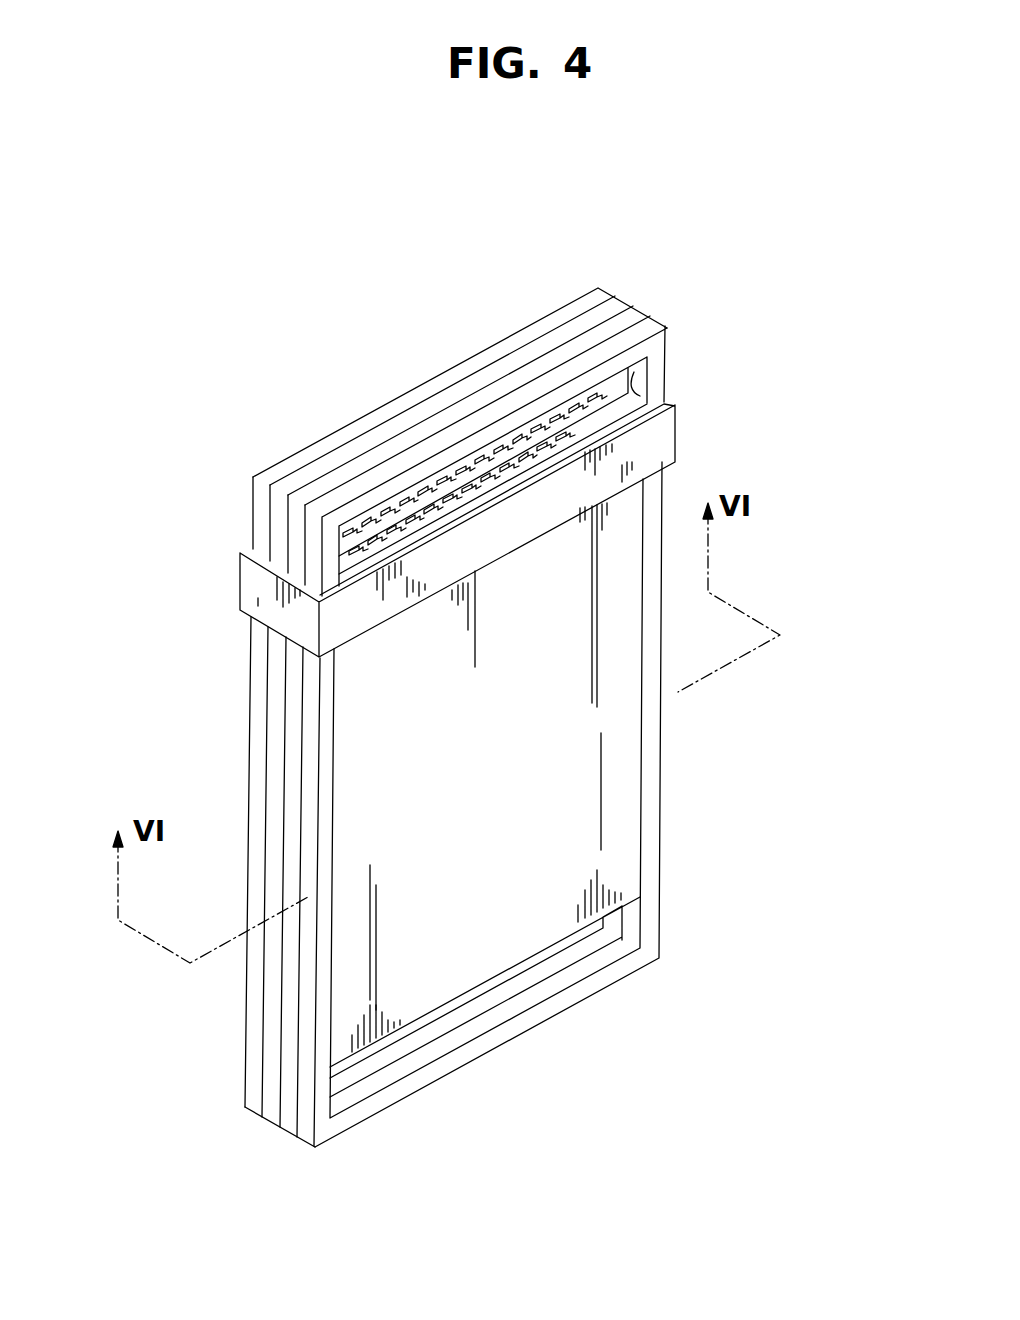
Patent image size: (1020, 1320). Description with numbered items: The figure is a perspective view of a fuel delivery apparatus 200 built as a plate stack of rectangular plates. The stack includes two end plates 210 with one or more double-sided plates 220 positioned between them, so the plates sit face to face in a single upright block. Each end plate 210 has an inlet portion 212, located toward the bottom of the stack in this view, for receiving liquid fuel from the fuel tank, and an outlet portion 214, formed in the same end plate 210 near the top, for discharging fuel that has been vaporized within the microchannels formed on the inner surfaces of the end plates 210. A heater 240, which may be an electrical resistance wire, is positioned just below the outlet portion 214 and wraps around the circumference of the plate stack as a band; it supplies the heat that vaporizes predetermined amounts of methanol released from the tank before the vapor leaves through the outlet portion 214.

The fuel delivery apparatus 200 is at (677, 294).
The end plate 210 is at (605, 362).
The inlet portion 212 is at (625, 937).
The outlet portion 214 is at (672, 403).
The double-sided plate 220 is at (287, 1110).
The heater 240 is at (662, 451).